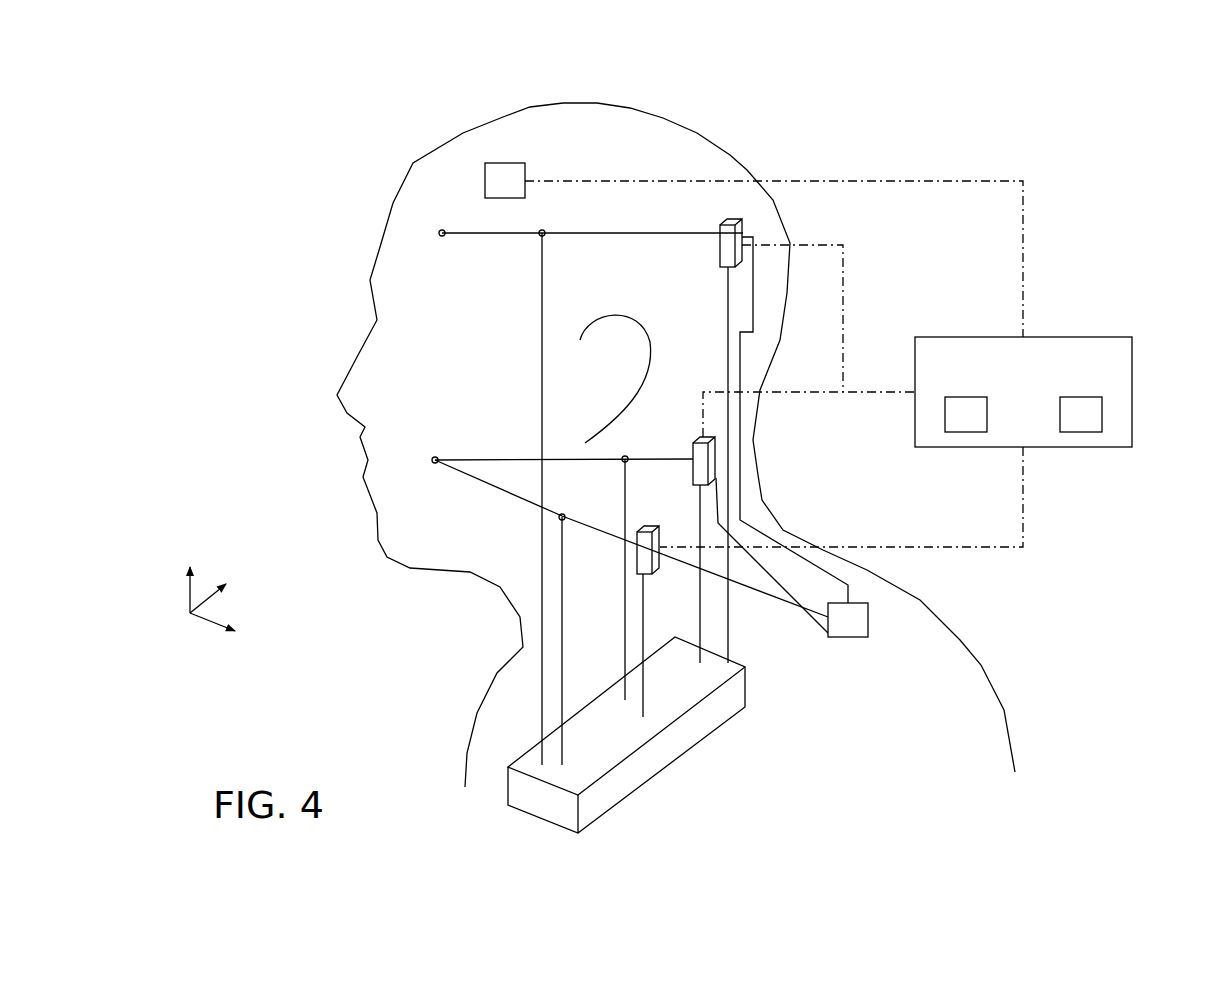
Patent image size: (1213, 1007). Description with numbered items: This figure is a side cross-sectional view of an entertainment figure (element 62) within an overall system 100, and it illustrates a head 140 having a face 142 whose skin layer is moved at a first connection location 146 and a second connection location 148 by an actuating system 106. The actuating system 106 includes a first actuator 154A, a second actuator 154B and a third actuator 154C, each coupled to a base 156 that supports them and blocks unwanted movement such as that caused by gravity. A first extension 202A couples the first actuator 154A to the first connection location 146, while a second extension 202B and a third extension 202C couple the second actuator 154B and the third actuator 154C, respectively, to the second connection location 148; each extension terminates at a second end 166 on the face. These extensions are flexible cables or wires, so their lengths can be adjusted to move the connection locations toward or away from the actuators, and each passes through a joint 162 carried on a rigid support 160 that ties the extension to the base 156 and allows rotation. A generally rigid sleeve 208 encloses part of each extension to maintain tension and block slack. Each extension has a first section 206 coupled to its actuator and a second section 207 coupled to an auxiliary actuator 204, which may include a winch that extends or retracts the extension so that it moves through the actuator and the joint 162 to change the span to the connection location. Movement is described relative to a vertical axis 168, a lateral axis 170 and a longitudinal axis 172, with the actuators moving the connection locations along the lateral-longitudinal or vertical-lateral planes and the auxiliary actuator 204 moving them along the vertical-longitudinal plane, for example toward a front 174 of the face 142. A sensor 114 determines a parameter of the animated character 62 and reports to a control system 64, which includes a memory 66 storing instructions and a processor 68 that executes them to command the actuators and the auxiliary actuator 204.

The entertainment figure 62 is at (805, 114).
The system 100 is at (1152, 134).
The head 140 is at (457, 135).
The face 142 is at (343, 176).
The sensor 114 is at (527, 171).
The joint 162 is at (545, 230).
The first actuator 154A is at (729, 219).
The second actuator 154B is at (716, 440).
The third actuator 154C is at (648, 528).
The first connection location 146 is at (441, 236).
The second connection location 148 is at (433, 459).
The second end 166 is at (460, 236).
The first extension 202A is at (571, 245).
The second extension 202B is at (468, 448).
The third extension 202C is at (508, 508).
The sleeve 208 is at (624, 236).
The first section 206 is at (721, 243).
The support 160 is at (542, 355).
The front 174 is at (353, 325).
The vertical axis 168 is at (189, 598).
The lateral axis 170 is at (207, 620).
The longitudinal axis 172 is at (200, 605).
The base 156 is at (690, 733).
The second section 207 is at (828, 633).
The auxiliary actuator 204 is at (868, 618).
The actuating system 106 is at (803, 687).
The control system 64 is at (1072, 337).
The memory 66 is at (967, 432).
The processor 68 is at (1080, 432).